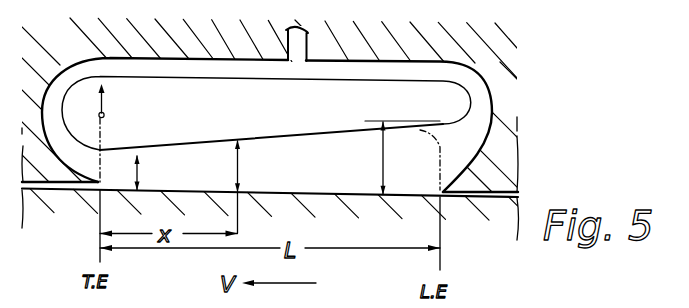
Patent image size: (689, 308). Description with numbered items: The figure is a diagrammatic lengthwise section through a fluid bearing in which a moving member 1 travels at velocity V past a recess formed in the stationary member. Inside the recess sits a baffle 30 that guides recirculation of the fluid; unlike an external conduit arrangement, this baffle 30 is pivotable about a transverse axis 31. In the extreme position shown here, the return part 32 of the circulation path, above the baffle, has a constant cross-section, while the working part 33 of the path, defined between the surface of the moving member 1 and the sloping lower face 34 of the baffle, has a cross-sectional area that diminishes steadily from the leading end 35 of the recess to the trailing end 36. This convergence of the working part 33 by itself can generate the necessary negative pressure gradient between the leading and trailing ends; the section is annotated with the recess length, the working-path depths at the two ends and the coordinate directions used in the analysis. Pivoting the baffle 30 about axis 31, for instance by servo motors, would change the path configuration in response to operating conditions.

The moving member 1 is at (349, 180).
The baffle 30 is at (219, 113).
The transverse axis 31 is at (100, 114).
The return part of the circulation path 32 is at (235, 66).
The working part of the circulation path 33 is at (325, 176).
The sloping lower face of the baffle 34 is at (352, 131).
The leading end of the recess 35 is at (417, 125).
The trailing end of the recess 36 is at (101, 150).